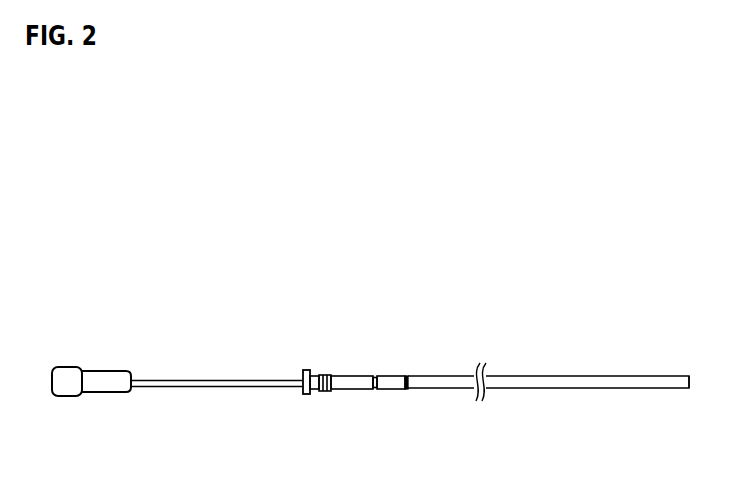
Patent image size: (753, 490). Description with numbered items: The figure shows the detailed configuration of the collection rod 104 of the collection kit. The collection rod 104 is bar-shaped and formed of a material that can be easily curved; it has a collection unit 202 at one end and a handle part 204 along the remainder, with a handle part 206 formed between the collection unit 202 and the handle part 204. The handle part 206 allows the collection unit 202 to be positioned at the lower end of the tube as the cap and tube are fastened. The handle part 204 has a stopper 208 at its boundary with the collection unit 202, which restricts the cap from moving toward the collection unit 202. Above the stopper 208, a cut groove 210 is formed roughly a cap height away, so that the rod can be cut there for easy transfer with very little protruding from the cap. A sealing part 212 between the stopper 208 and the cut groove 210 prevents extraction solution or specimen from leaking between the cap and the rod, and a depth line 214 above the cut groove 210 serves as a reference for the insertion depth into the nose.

The collection rod 104 is at (607, 193).
The collection unit 202 is at (75, 396).
The handle part 204 is at (689, 285).
The handle part 206 is at (190, 388).
The stopper 208 is at (305, 395).
The cut groove 210 is at (373, 393).
The sealing part 212 is at (329, 375).
The depth line 214 is at (407, 375).